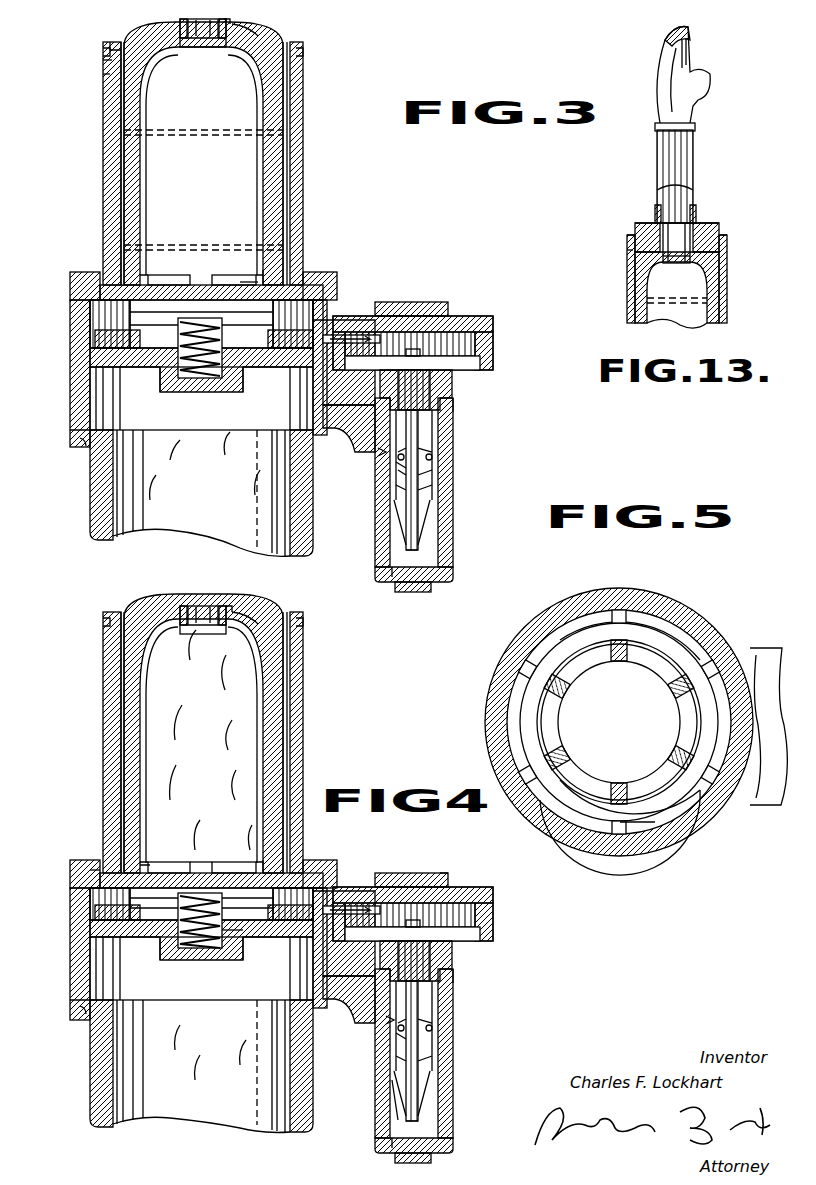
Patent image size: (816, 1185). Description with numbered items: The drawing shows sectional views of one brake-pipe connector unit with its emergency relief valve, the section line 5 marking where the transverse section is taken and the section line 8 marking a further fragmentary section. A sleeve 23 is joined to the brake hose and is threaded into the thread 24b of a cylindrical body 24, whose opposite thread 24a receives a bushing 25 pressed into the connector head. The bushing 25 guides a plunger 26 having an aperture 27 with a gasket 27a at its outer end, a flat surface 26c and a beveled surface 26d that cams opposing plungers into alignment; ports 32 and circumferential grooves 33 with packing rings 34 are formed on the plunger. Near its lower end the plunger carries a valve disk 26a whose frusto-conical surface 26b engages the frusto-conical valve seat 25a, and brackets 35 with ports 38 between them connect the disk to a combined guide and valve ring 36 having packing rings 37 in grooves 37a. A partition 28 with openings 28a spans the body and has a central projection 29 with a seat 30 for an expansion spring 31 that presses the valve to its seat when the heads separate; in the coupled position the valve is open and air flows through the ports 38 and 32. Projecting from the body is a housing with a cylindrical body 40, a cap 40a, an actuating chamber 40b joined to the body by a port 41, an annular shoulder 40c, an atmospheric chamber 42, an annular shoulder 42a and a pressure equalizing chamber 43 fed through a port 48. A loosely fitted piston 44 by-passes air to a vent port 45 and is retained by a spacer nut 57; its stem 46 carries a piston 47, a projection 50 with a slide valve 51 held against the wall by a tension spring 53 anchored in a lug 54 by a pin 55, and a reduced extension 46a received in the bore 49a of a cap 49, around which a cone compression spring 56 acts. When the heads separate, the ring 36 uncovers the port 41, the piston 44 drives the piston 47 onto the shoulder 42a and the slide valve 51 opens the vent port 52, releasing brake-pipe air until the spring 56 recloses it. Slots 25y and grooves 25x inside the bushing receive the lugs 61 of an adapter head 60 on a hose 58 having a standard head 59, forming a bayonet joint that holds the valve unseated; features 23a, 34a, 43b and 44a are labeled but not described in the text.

In FIG. 4, the section line 5— 5 is at (62, 882).
In FIG. 5, the section line 8— 8 is at (500, 626).
In FIG. 3, the sleeve 23 is at (95, 495).
In FIG. 4, the sleeve 23 is at (95, 1058).
In FIG. 3, the cylinder flange 23a is at (310, 278).
In FIG. 3, the cylindrical body 24 is at (75, 380).
In FIG. 5, the cylindrical body 24 is at (700, 612).
In FIG. 4, the cylindrical body 24 is at (75, 968).
In FIG. 3, the thread 24a is at (72, 302).
In FIG. 4, the thread 24a is at (72, 862).
In FIG. 3, the thread 24b is at (85, 440).
In FIG. 4, the thread 24b is at (85, 1010).
In FIG. 3, the bushing 25 is at (305, 180).
In FIG. 13, the bushing 25 is at (728, 282).
In FIG. 4, the bushing 25 is at (305, 672).
In FIG. 3, the frusto-conical valve seat 25a is at (336, 300).
In FIG. 4, the frusto-conical valve seat 25a is at (120, 872).
In FIG. 3, the circumferentially extending grooves 25x is at (106, 76).
In FIG. 13, the circumferentially extending grooves 25x is at (630, 258).
In FIG. 3, the vertical slots 25y is at (103, 62).
In FIG. 13, the vertical slots 25y is at (627, 242).
In FIG. 3, the plunger 26 is at (281, 78).
In FIG. 13, the plunger 26 is at (634, 287).
In FIG. 5, the plunger 26 is at (676, 748).
In FIG. 4, the plunger 26 is at (281, 638).
In FIG. 3, the valve disk 26a is at (266, 276).
In FIG. 4, the valve disk 26a is at (255, 625).
In FIG. 3, the frusto-conical surface 26b is at (250, 285).
In FIG. 4, the frusto-conical surface 26b is at (228, 612).
In FIG. 3, the flat surface 26c is at (240, 34).
In FIG. 3, the beveled surface 26d is at (110, 44).
In FIG. 3, the aperture 27 is at (183, 47).
In FIG. 13, the aperture 27 is at (663, 264).
In FIG. 4, the aperture 27 is at (184, 640).
In FIG. 3, the gasket 27a is at (226, 24).
In FIG. 13, the gasket 27a is at (686, 266).
In FIG. 3, the partition 28 is at (92, 358).
In FIG. 4, the partition 28 is at (92, 940).
In FIG. 3, the openings 28a is at (98, 340).
In FIG. 4, the openings 28a is at (98, 915).
In FIG. 3, the central projection 29 is at (140, 386).
In FIG. 4, the central projection 29 is at (152, 950).
In FIG. 3, the seat 30 is at (218, 395).
In FIG. 4, the seat 30 is at (235, 960).
In FIG. 3, the expansion spring 31 is at (182, 392).
In FIG. 4, the expansion spring 31 is at (192, 958).
In FIG. 3, the ports 32 is at (168, 278).
In FIG. 5, the ports 32 is at (580, 660).
In FIG. 4, the ports 32 is at (172, 872).
In FIG. 3, the circumferential grooves 33 is at (125, 150).
In FIG. 13, the circumferential grooves 33 is at (636, 306).
In FIG. 4, the circumferential grooves 33 is at (124, 745).
In FIG. 3, the packing rings 34 is at (286, 136).
In FIG. 4, the packing rings 34 is at (286, 706).
In FIG. 5, the passage 34a is at (650, 622).
In FIG. 4, the passage 34a is at (90, 875).
In FIG. 3, the brackets 35 is at (222, 336).
In FIG. 5, the brackets 35 is at (676, 826).
In FIG. 4, the brackets 35 is at (222, 906).
In FIG. 3, the combined guide and valve ring 36 is at (100, 332).
In FIG. 5, the combined guide and valve ring 36 is at (585, 825).
In FIG. 4, the combined guide and valve ring 36 is at (100, 900).
In FIG. 3, the packing rings 37 is at (96, 318).
In FIG. 4, the packing rings 37 is at (96, 912).
In FIG. 4, the grooves 37a is at (243, 938).
In FIG. 5, the ports 38 is at (680, 670).
In FIG. 4, the ports 38 is at (232, 873).
In FIG. 3, the cylindrical body 40 is at (494, 327).
In FIG. 5, the cylindrical body 40 is at (748, 722).
In FIG. 4, the cylindrical body 40 is at (494, 905).
In FIG. 3, the cap 40a is at (450, 309).
In FIG. 4, the cap 40a is at (450, 880).
In FIG. 3, the actuating chamber 40b is at (494, 336).
In FIG. 4, the actuating chamber 40b is at (446, 873).
In FIG. 3, the annular shoulder 40c is at (302, 400).
In FIG. 4, the annular shoulder 40c is at (494, 893).
In FIG. 3, the port 41 is at (331, 320).
In FIG. 4, the port 41 is at (335, 891).
In FIG. 3, the atmospheric chamber 42 is at (454, 378).
In FIG. 4, the atmospheric chamber 42 is at (454, 948).
In FIG. 3, the annular shoulder 42a is at (460, 412).
In FIG. 4, the annular shoulder 42a is at (460, 983).
In FIG. 3, the pressure equalizing chamber 43 is at (462, 494).
In FIG. 4, the pressure equalizing chamber 43 is at (444, 1050).
In FIG. 4, the tube bore 43b is at (396, 1086).
In FIG. 3, the piston 44 is at (481, 362).
In FIG. 4, the piston 44 is at (481, 928).
In FIG. 3, the chamber 44a is at (369, 345).
In FIG. 4, the chamber 44a is at (379, 906).
In FIG. 3, the vent port 45 is at (494, 366).
In FIG. 4, the vent port 45 is at (494, 937).
In FIG. 3, the stem 46 is at (408, 478).
In FIG. 4, the stem 46 is at (418, 994).
In FIG. 3, the reduced extension 46a is at (410, 548).
In FIG. 4, the reduced extension 46a is at (430, 1085).
In FIG. 3, the piston 47 is at (455, 400).
In FIG. 5, the piston 47 is at (630, 832).
In FIG. 4, the piston 47 is at (455, 970).
In FIG. 3, the port 48 is at (360, 450).
In FIG. 4, the port 48 is at (380, 1023).
In FIG. 3, the cap 49 is at (436, 586).
In FIG. 4, the cap 49 is at (262, 1000).
In FIG. 3, the bore 49a is at (398, 575).
In FIG. 4, the bore 49a is at (398, 1145).
In FIG. 3, the projection 50 is at (410, 490).
In FIG. 4, the projection 50 is at (432, 1040).
In FIG. 3, the slide valve 51 is at (400, 466).
In FIG. 4, the slide valve 51 is at (400, 1036).
In FIG. 3, the vent port 52 is at (384, 452).
In FIG. 4, the vent port 52 is at (392, 1020).
In FIG. 3, the tension spring 53 is at (430, 462).
In FIG. 4, the tension spring 53 is at (432, 1030).
In FIG. 3, the lug 54 is at (431, 470).
In FIG. 4, the lug 54 is at (432, 1026).
In FIG. 3, the pin 55 is at (425, 455).
In FIG. 4, the pin 55 is at (396, 1024).
In FIG. 3, the cone compression spring 56 is at (420, 520).
In FIG. 4, the cone compression spring 56 is at (400, 1070).
In FIG. 3, the spacer nut 57 is at (414, 349).
In FIG. 4, the spacer nut 57 is at (408, 920).
In FIG. 13, the hose 58 is at (690, 142).
In FIG. 13, the head 59 is at (662, 50).
In FIG. 13, the adapter head 60 is at (705, 225).
In FIG. 13, the lugs 61 is at (722, 254).